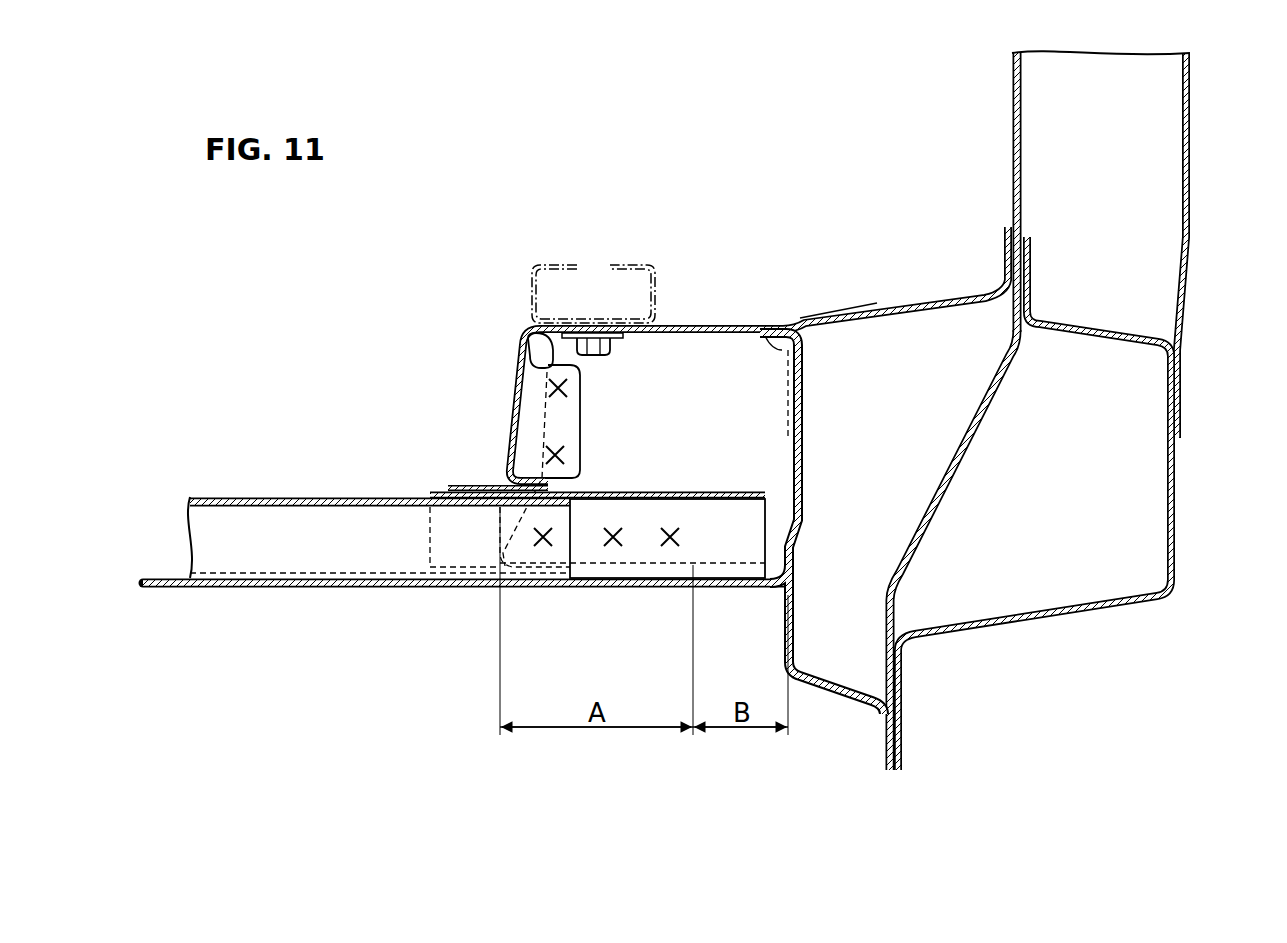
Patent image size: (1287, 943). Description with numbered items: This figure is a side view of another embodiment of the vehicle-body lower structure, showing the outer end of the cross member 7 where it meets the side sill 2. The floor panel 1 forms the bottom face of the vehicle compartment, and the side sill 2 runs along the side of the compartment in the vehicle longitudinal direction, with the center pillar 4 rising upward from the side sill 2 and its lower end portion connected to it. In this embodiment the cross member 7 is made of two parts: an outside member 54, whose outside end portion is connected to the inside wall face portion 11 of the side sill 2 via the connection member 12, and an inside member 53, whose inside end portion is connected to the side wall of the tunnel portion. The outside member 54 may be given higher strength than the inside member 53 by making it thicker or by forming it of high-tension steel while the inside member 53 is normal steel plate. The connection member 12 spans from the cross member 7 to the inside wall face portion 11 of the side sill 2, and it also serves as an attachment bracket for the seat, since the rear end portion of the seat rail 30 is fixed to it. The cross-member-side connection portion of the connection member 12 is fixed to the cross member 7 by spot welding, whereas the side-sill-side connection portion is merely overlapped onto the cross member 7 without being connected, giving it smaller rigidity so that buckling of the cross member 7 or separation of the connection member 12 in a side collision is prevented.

The floor panel 1 is at (160, 578).
The side sill 2 is at (1181, 532).
The center pillar 4 is at (1009, 134).
The cross member 7 is at (340, 468).
The inside wall face portion 11 is at (786, 617).
The connection member 12 is at (729, 321).
The seat rail 30 is at (555, 265).
The inside member 53 is at (248, 495).
The outside member 54 is at (672, 491).